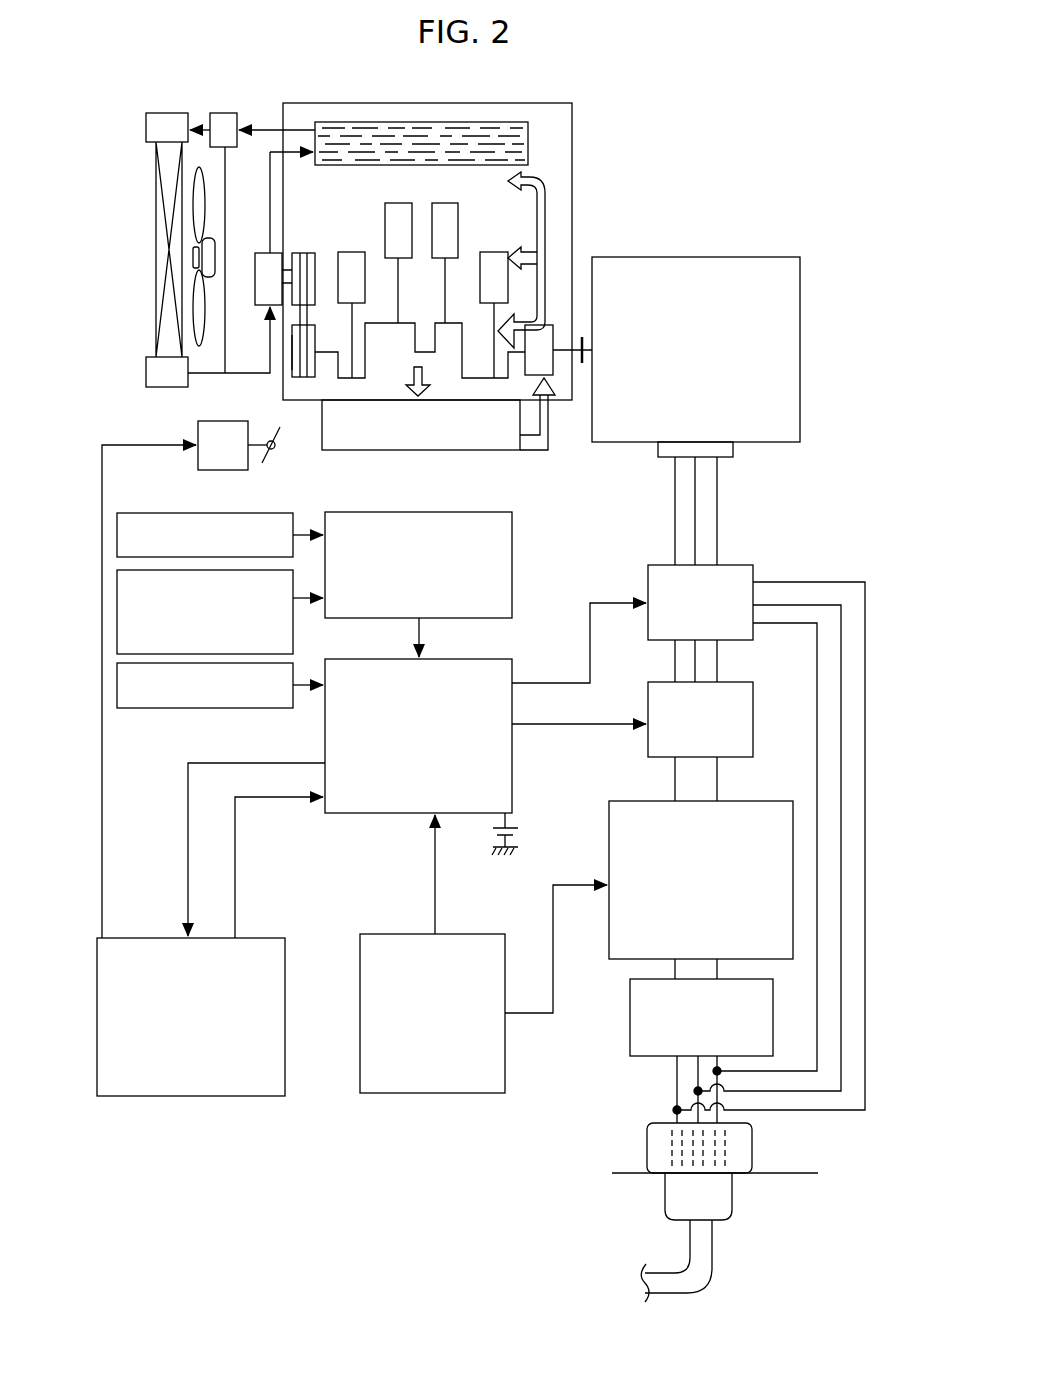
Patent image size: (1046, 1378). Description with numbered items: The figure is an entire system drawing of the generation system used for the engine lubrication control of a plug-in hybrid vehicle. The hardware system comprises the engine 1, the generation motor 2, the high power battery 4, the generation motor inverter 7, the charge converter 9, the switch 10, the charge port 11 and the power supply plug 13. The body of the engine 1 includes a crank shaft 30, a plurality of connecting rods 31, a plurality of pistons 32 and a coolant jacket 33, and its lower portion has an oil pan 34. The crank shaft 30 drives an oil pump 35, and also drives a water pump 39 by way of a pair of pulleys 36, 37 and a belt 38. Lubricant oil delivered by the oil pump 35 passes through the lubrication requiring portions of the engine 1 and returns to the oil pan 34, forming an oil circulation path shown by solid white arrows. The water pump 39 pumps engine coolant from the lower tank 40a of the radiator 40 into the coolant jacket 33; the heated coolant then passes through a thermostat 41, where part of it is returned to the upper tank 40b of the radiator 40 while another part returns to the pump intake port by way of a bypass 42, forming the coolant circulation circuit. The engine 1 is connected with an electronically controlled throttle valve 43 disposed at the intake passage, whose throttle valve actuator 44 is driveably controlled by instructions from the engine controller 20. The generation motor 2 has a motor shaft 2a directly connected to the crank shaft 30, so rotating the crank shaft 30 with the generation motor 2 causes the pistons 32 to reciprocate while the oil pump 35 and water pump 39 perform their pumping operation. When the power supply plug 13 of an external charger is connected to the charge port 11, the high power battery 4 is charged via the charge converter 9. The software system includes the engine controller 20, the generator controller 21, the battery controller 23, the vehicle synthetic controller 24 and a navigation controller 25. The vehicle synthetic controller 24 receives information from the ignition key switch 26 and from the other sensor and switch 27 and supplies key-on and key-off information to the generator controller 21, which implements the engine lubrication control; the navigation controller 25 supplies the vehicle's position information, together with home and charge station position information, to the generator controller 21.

The engine 1 is at (582, 93).
The generation motor 2 is at (742, 252).
The motor shaft 2a is at (590, 338).
The high power battery 4 is at (768, 800).
The generation motor inverter 7 is at (755, 718).
The charge converter 9 is at (630, 996).
The switch 10 is at (743, 564).
The charge port 11 is at (752, 1140).
The power supply plug 13 is at (732, 1195).
The engine controller 20 is at (198, 1097).
The generator controller 21 is at (512, 660).
The battery controller 23 is at (487, 1097).
The vehicle synthetic controller 24 is at (512, 522).
The navigation controller 25 is at (117, 685).
The ignition key switch 26 is at (117, 535).
The other sensor and switch 27 is at (117, 608).
The crank shaft 30 is at (437, 349).
The connecting rod 31 is at (397, 292).
The piston 32 is at (383, 232).
The coolant jacket 33 is at (572, 135).
The oil pan 34 is at (490, 450).
The oil pump 35 is at (545, 378).
The pulley 36 is at (292, 360).
The pulley 37 is at (310, 253).
The belt 38 is at (315, 328).
The water pump 39 is at (262, 305).
The radiator 40 is at (150, 255).
The lower tank 40a is at (146, 375).
The upper tank 40b is at (146, 128).
The thermostat 41 is at (225, 113).
The bypass 42 is at (227, 215).
The throttle valve 43 is at (274, 462).
The throttle valve actuator 44 is at (198, 428).